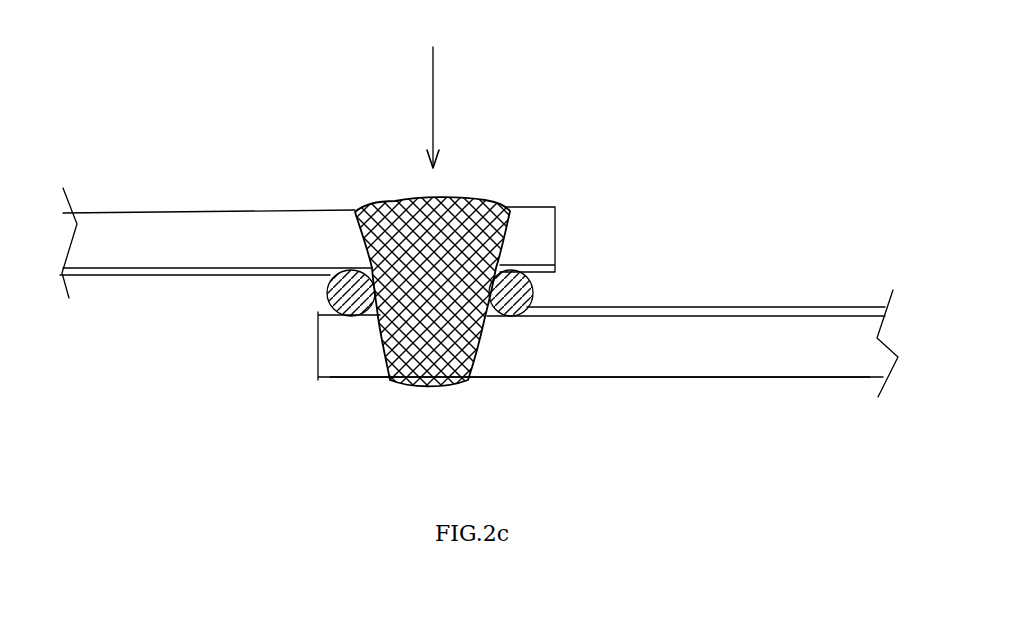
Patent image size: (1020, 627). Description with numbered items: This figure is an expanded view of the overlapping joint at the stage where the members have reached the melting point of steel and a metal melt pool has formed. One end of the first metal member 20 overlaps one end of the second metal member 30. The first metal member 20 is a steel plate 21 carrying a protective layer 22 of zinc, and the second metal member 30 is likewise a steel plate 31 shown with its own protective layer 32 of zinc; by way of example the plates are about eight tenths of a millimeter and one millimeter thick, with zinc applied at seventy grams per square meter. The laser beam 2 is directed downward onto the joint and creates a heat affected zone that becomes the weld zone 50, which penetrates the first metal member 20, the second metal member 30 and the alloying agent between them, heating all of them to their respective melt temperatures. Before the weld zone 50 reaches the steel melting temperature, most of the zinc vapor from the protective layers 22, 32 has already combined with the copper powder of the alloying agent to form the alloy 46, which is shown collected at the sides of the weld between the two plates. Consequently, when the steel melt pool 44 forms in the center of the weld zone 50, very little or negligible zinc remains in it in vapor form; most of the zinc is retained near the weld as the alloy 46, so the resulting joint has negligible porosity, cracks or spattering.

The laser beam 2 is at (437, 83).
The first metal member 20 is at (560, 207).
The plate 21 is at (125, 250).
The protective layer 22 is at (158, 277).
The second metal member 30 is at (853, 378).
The plate 31 is at (768, 355).
The protective layer 32 is at (818, 305).
The steel melt pool 44 is at (436, 356).
The alloy 46 is at (327, 290).
The weld zone 50 is at (392, 203).